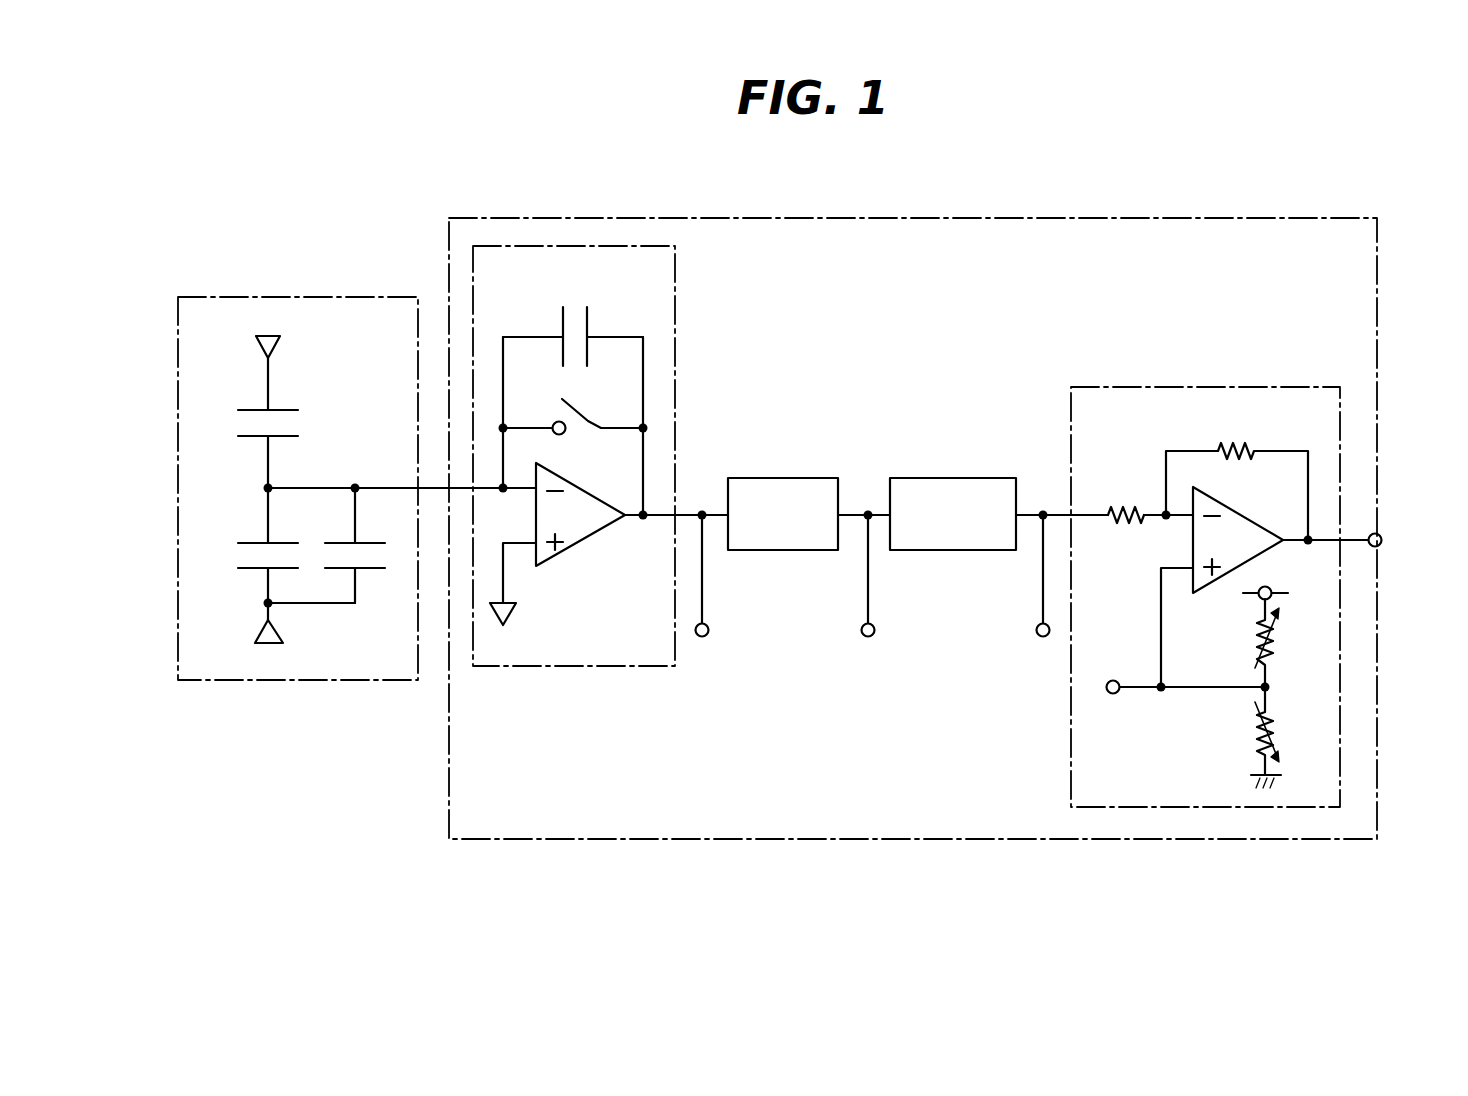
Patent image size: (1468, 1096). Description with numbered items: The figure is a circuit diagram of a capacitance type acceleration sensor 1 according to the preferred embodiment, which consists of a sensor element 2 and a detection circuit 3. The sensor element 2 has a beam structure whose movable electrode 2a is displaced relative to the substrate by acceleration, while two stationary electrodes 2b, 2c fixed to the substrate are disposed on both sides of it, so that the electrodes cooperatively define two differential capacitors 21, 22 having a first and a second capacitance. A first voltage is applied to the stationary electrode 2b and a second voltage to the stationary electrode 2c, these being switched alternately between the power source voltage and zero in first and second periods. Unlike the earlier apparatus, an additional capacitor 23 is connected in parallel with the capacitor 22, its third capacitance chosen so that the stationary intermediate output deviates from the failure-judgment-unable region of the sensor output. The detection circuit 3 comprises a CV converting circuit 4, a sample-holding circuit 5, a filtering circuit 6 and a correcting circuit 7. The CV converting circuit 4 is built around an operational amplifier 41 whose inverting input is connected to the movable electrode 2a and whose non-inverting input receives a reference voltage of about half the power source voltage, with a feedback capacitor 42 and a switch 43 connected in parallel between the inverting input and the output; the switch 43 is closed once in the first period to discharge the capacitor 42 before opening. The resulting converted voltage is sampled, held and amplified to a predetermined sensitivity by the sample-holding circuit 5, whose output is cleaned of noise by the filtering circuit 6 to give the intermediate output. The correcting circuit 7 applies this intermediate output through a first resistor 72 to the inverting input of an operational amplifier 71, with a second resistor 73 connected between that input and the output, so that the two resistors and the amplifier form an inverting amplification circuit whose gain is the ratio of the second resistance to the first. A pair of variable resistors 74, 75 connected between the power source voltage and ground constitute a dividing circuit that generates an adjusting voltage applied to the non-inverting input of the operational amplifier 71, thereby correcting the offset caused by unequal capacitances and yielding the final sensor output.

The acceleration sensor 1 is at (314, 206).
The sensor element 2 is at (347, 297).
The detection circuit 3 is at (1246, 218).
The CV converting circuit 4 is at (676, 312).
The sample-holding (S/H) circuit 5 is at (800, 478).
The filtering circuit 6 is at (968, 478).
The correcting circuit 7 is at (1271, 387).
The differential capacitor 21 is at (238, 427).
The differential capacitor 22 is at (238, 561).
The capacitor 23 is at (383, 557).
The movable electrode 2a is at (280, 438).
The stationary electrode 2b is at (280, 410).
The stationary electrode 2c is at (280, 571).
The operational amplifier 41 is at (582, 489).
The capacitor 42 is at (575, 308).
The switch 43 is at (587, 416).
The operational amplifier 71 is at (1254, 521).
The resistor 72 is at (1128, 500).
The resistor 73 is at (1237, 440).
The variable resistor 74 is at (1278, 633).
The variable resistor 75 is at (1278, 723).